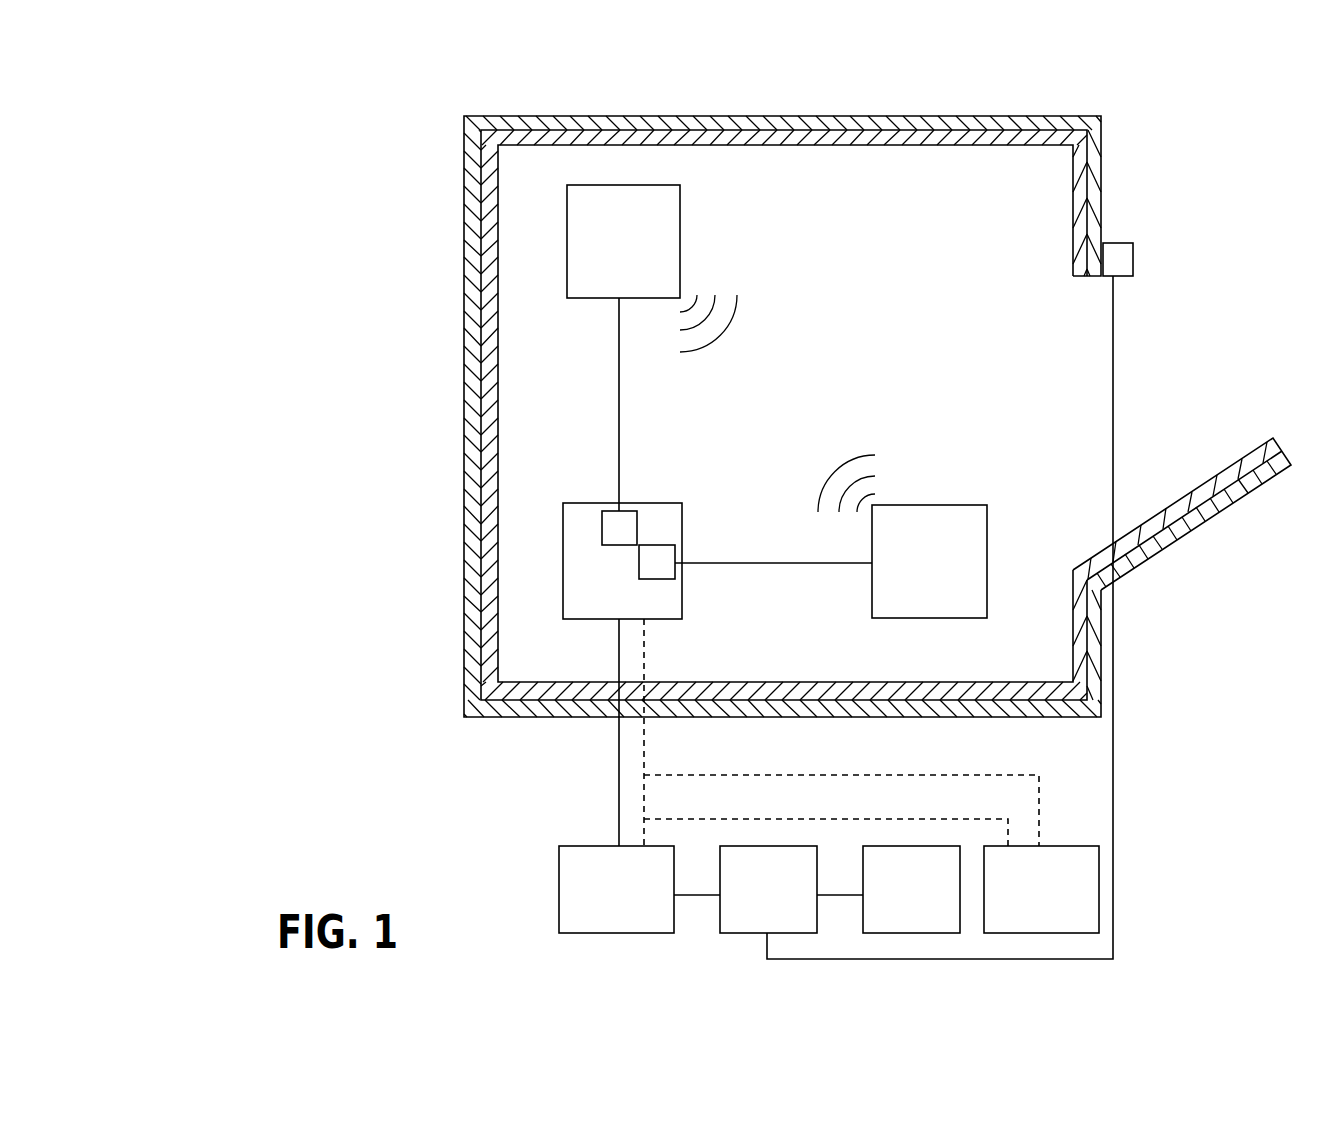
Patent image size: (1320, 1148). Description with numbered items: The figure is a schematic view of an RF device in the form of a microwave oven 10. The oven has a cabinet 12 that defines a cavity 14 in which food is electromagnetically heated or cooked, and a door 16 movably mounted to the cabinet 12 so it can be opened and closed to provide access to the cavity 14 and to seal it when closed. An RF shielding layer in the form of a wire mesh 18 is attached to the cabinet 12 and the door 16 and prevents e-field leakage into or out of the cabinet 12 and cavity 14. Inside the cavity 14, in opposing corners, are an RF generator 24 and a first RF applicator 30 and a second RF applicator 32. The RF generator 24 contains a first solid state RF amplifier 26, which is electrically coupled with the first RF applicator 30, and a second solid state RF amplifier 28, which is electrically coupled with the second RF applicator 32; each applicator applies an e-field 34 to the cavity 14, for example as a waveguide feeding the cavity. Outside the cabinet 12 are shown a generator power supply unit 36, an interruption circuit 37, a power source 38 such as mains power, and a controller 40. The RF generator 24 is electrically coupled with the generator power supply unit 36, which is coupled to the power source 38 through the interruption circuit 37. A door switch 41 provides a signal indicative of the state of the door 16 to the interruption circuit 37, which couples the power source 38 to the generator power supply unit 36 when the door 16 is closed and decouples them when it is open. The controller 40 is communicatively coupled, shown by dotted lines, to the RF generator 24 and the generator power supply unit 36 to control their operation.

The microwave oven 10 is at (1068, 78).
The cabinet 12 is at (893, 122).
The cavity 14 is at (813, 358).
The door 16 is at (1195, 534).
The wire mesh 18 is at (950, 138).
The RF generator 24 is at (589, 602).
The first solid state RF amplifier 26 is at (611, 539).
The second solid state RF amplifier 28 is at (649, 573).
The first RF applicator 30 is at (614, 249).
The second RF applicator 32 is at (921, 569).
The e-field 34 is at (740, 308).
The generator power supply unit 36 is at (607, 903).
The interruption circuit 37 is at (759, 903).
The power source 38 is at (902, 903).
The controller 40 is at (1032, 903).
The door switch 41 is at (1110, 271).